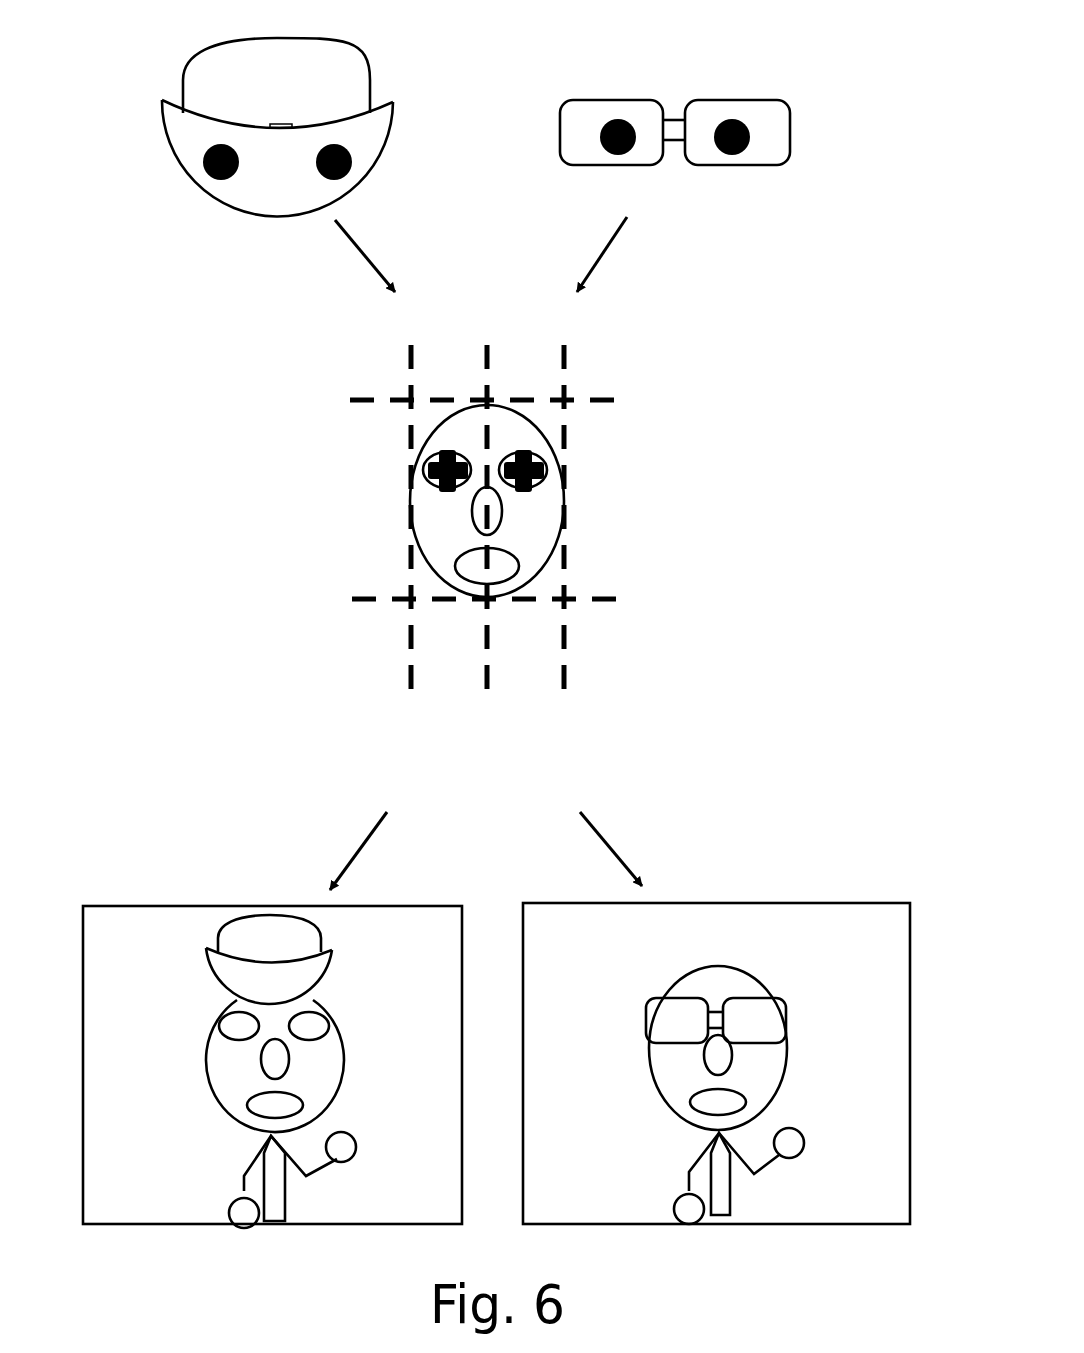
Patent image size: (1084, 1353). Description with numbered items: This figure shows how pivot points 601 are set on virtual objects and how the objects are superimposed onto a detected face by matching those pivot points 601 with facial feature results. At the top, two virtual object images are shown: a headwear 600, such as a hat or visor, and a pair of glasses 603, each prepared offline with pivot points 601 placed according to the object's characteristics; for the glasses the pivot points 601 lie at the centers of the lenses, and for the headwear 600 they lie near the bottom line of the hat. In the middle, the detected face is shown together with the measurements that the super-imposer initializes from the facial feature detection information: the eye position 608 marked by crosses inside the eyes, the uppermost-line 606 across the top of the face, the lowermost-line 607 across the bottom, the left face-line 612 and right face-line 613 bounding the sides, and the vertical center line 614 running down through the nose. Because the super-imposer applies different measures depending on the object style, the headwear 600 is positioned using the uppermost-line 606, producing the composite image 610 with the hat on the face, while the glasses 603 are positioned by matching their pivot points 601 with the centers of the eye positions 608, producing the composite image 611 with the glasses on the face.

The headwear 600 is at (302, 52).
The pivot points 601 is at (200, 183).
The glasses graphical feature 603 is at (743, 108).
The uppermost-line 606 is at (350, 402).
The lowermost-line 607 is at (352, 598).
The eye position 608 is at (447, 493).
The composite image 610 is at (233, 903).
The composite image 611 is at (801, 900).
The left face-line 612 is at (410, 657).
The right face-line 613 is at (568, 650).
The vertical center line 614 is at (485, 670).